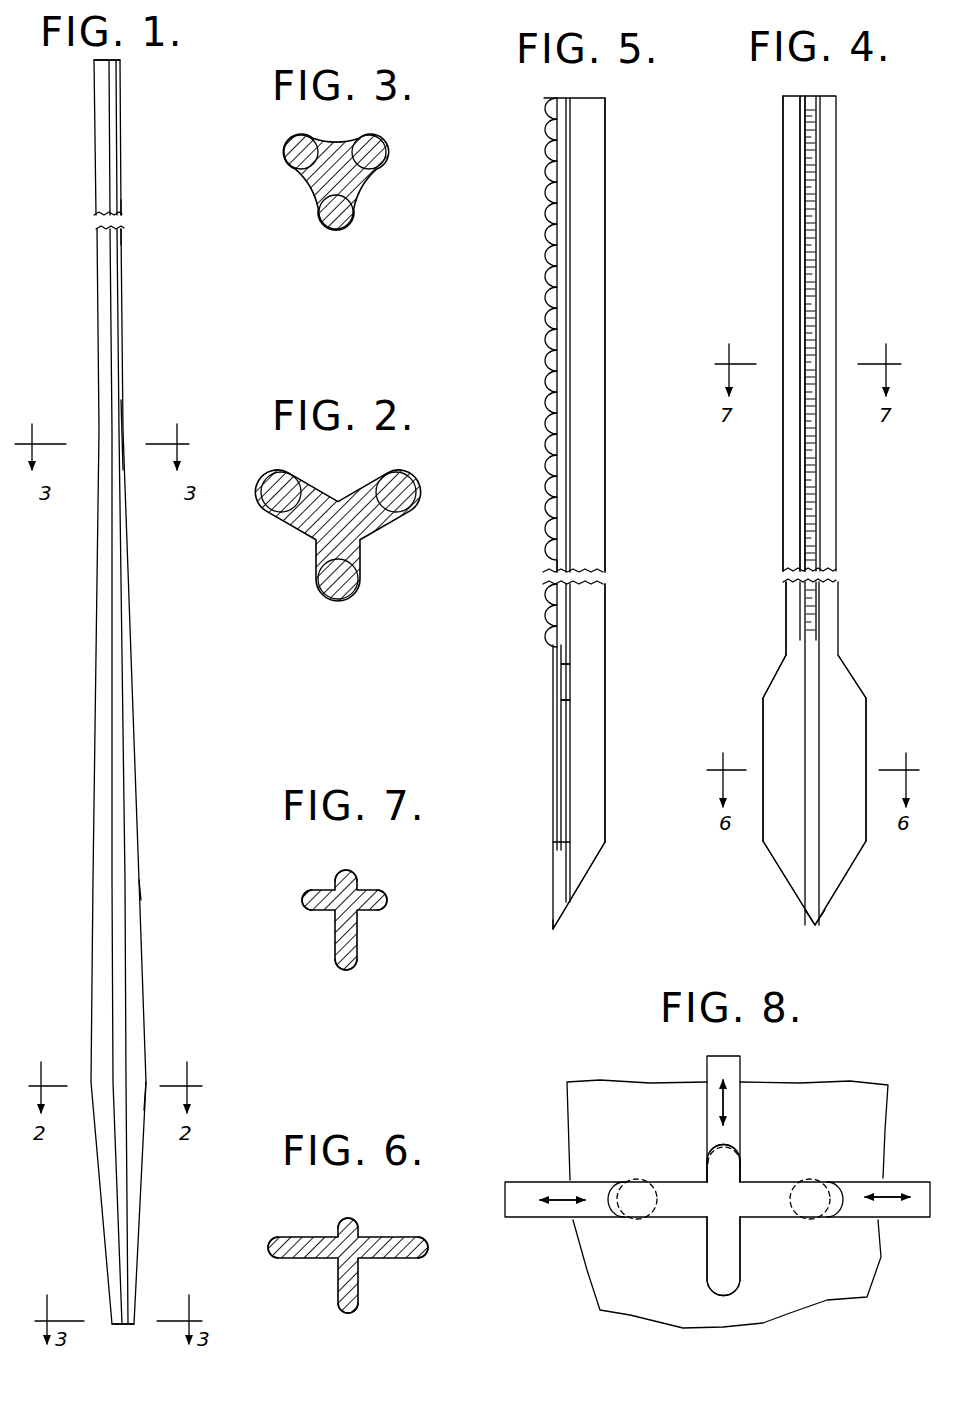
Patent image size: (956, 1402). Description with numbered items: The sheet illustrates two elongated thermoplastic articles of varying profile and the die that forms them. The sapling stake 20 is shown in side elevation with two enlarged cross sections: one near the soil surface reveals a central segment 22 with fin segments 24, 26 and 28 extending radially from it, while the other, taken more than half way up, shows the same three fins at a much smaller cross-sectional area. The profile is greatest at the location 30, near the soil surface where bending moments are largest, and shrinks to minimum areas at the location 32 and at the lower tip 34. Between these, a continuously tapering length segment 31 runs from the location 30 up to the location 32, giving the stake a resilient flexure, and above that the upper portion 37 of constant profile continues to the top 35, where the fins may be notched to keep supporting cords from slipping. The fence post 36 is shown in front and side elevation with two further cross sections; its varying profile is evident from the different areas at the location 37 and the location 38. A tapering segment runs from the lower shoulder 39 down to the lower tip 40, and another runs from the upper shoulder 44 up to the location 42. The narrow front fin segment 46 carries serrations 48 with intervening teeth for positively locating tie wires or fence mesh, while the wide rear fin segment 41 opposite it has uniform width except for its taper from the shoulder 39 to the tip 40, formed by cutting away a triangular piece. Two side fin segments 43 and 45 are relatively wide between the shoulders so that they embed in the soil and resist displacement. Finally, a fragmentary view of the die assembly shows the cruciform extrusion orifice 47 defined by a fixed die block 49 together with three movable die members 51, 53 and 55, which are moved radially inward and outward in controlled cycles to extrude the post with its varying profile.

In FIG. 1, the sapling stake 20 is at (142, 650).
In FIG. 3, the sapling stake 20 is at (299, 204).
In FIG. 2, the sapling stake 20 is at (299, 541).
In FIG. 3, the central segment 22 is at (343, 183).
In FIG. 2, the central segment 22 is at (350, 534).
In FIG. 3, the fin segment 24 is at (296, 143).
In FIG. 2, the fin segment 24 is at (273, 481).
In FIG. 3, the fin segment 26 is at (375, 151).
In FIG. 2, the fin segment 26 is at (413, 483).
In FIG. 3, the fin segment 28 is at (337, 228).
In FIG. 2, the fin segment 28 is at (342, 600).
In FIG. 1, the location of maximum section modulus 30 is at (146, 1082).
In FIG. 1, the tapering length segment 31 is at (141, 896).
In FIG. 1, the location of minimum cross-sectional area 32 is at (122, 441).
In FIG. 1, the lower tip 34 is at (135, 1323).
In FIG. 1, the top 35 is at (122, 60).
In FIG. 5, the fence post 36 is at (538, 265).
In FIG. 4, the fence post 36 is at (772, 313).
In FIG. 7, the fence post 36 is at (364, 880).
In FIG. 6, the fence post 36 is at (372, 1228).
In FIG. 1, the upper portion 37 is at (122, 234).
In FIG. 4, the upper portion 37 is at (763, 744).
In FIG. 4, the location 38 is at (783, 437).
In FIG. 5, the lower shoulder 39 is at (566, 843).
In FIG. 4, the lower shoulder 39 is at (763, 843).
In FIG. 5, the lower tip 40 is at (553, 929).
In FIG. 4, the lower tip 40 is at (815, 926).
In FIG. 5, the rear fin segment 41 is at (600, 436).
In FIG. 7, the rear fin segment 41 is at (348, 967).
In FIG. 6, the rear fin segment 41 is at (356, 1311).
In FIG. 8, the rear fin segment 41 is at (747, 1256).
In FIG. 5, the location 42 is at (566, 664).
In FIG. 4, the location 42 is at (786, 656).
In FIG. 4, the side fin segment 43 is at (790, 483).
In FIG. 7, the side fin segment 43 is at (302, 909).
In FIG. 6, the side fin segment 43 is at (268, 1257).
In FIG. 8, the side fin segment 43 is at (663, 1185).
In FIG. 5, the upper shoulder 44 is at (566, 700).
In FIG. 4, the upper shoulder 44 is at (763, 698).
In FIG. 4, the side fin segment 45 is at (830, 483).
In FIG. 7, the side fin segment 45 is at (382, 906).
In FIG. 6, the side fin segment 45 is at (425, 1255).
In FIG. 8, the side fin segment 45 is at (790, 1210).
In FIG. 5, the front fin segment 46 is at (547, 208).
In FIG. 4, the front fin segment 46 is at (800, 224).
In FIG. 7, the front fin segment 46 is at (343, 872).
In FIG. 6, the front fin segment 46 is at (347, 1222).
In FIG. 8, the front fin segment 46 is at (726, 1175).
In FIG. 8, the extrusion orifice 47 is at (725, 1220).
In FIG. 5, the serrations 48 is at (555, 346).
In FIG. 4, the serrations 48 is at (812, 262).
In FIG. 8, the serrations 48 is at (712, 1147).
In FIG. 8, the fixed die block 49 is at (608, 1267).
In FIG. 8, the movable die member 51 is at (553, 1188).
In FIG. 8, the movable die member 53 is at (733, 1067).
In FIG. 8, the movable die member 55 is at (893, 1185).